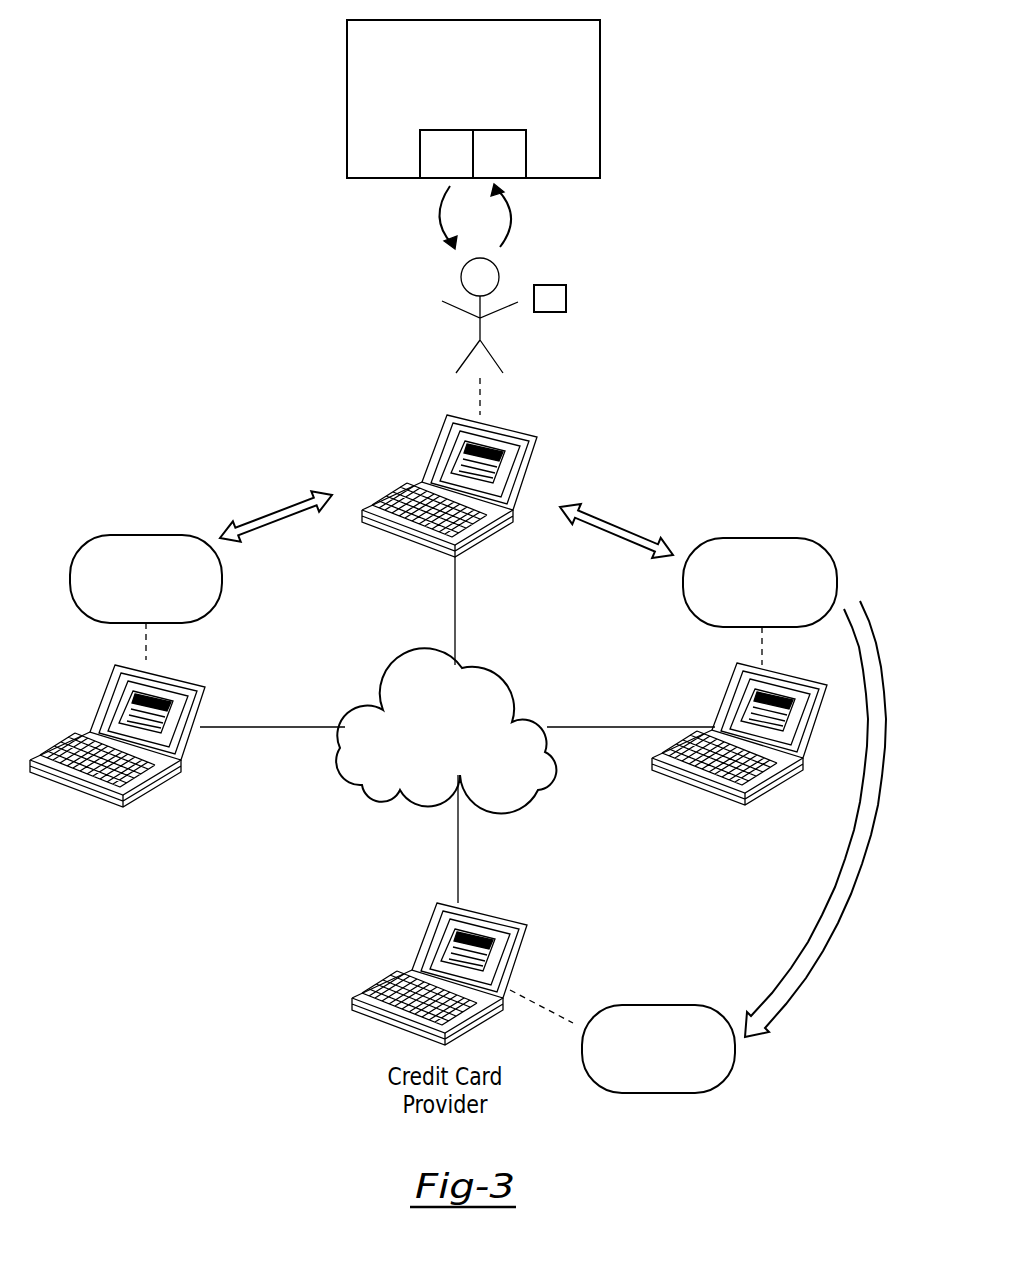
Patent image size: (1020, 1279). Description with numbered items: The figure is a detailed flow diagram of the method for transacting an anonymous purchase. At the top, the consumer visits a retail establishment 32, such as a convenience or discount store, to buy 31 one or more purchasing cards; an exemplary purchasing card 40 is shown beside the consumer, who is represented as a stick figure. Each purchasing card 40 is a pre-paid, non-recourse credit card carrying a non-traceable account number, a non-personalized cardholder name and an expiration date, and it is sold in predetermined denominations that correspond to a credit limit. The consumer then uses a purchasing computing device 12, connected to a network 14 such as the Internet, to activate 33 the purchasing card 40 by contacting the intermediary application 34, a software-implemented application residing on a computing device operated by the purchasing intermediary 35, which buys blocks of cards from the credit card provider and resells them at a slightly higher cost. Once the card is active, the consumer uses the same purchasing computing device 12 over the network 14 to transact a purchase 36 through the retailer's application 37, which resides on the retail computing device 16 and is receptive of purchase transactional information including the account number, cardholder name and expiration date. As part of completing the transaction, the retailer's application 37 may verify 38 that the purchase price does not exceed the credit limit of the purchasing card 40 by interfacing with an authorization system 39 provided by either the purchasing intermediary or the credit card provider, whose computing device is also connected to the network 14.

The purchasing computing device 12 is at (428, 456).
The network 14 is at (507, 662).
The retail computing device 16 is at (718, 703).
The buy 31 is at (448, 216).
The retail establishment 32 is at (600, 72).
The activate 33 is at (276, 495).
The intermediary application 34 is at (147, 535).
The purchasing intermediary 35 is at (97, 700).
The transact a purchase 36 is at (616, 511).
The retailer's application 37 is at (827, 550).
The verify 38 is at (815, 819).
The authorization system 39 is at (706, 1093).
The purchasing card 40 is at (566, 300).